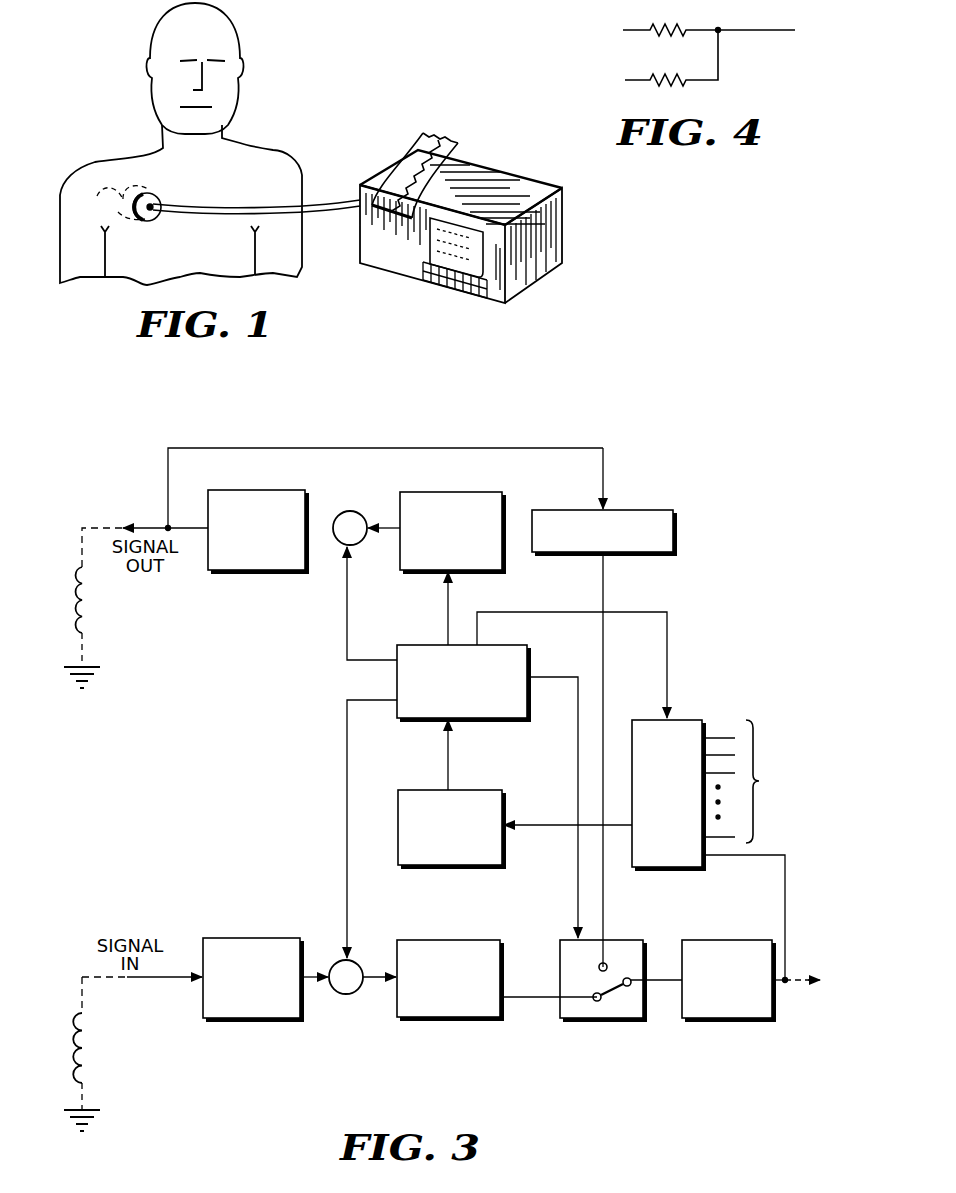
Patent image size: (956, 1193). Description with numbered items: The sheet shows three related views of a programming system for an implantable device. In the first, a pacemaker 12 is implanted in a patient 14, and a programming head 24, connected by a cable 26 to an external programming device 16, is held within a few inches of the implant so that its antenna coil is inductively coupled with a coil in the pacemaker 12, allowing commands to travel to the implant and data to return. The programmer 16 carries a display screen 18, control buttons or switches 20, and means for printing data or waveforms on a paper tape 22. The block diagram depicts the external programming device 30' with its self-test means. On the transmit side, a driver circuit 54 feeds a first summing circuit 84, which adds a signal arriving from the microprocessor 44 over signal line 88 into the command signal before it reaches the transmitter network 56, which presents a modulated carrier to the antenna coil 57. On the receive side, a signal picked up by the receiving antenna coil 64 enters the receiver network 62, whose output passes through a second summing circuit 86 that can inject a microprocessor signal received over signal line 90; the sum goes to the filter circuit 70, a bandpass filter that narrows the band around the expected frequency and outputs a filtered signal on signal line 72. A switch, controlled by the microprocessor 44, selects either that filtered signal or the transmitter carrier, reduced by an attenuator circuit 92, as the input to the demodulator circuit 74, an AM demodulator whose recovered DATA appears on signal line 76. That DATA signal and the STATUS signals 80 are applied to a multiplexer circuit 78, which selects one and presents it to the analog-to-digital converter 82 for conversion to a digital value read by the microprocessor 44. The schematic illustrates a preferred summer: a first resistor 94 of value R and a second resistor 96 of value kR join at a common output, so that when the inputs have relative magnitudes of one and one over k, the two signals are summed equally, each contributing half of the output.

In FIG. 1, the pacemaker 12 is at (118, 203).
In FIG. 1, the patient 14 is at (262, 154).
In FIG. 1, the programming head 24 is at (160, 196).
In FIG. 1, the cable 26 is at (320, 208).
In FIG. 1, the external programming device 16 is at (494, 178).
In FIG. 1, the paper tape 22 is at (450, 150).
In FIG. 1, the display screen 18 is at (440, 236).
In FIG. 1, the control buttons or switches 20 is at (437, 275).
In FIG. 4, the first resistor 94 is at (688, 27).
In FIG. 4, the second resistor 96 is at (690, 84).
In FIG. 3, the external programming device 30' is at (219, 1114).
In FIG. 3, the transmitter network 56 is at (295, 488).
In FIG. 3, the antenna coil 57 is at (80, 604).
In FIG. 3, the first summing circuit 84 is at (358, 512).
In FIG. 3, the driver circuit 54 is at (478, 470).
In FIG. 3, the attenuator circuit 92 is at (647, 510).
In FIG. 3, the signal line 88 is at (346, 593).
In FIG. 3, the microprocessor 44 is at (526, 622).
In FIG. 3, the signal line 90 is at (343, 738).
In FIG. 3, the analog-to-digital converter 82 is at (485, 790).
In FIG. 3, the multiplexer circuit 78 is at (712, 697).
In FIG. 3, the STATUS signals 80 is at (743, 781).
In FIG. 3, the receiving antenna coil 64 is at (82, 1032).
In FIG. 3, the receiver network 62 is at (280, 918).
In FIG. 3, the second summing circuit 86 is at (343, 993).
In FIG. 3, the filter circuit 70 is at (508, 952).
In FIG. 3, the signal line 72 is at (655, 980).
In FIG. 3, the demodulator circuit 74 is at (757, 920).
In FIG. 3, the signal line 76 is at (800, 1000).